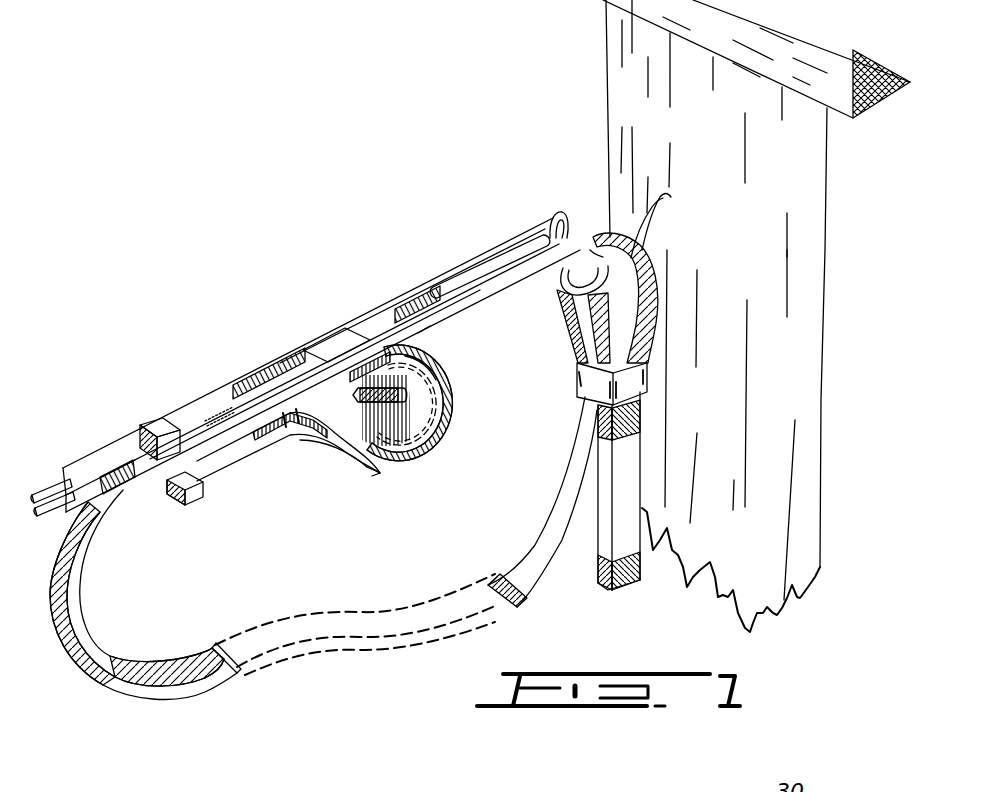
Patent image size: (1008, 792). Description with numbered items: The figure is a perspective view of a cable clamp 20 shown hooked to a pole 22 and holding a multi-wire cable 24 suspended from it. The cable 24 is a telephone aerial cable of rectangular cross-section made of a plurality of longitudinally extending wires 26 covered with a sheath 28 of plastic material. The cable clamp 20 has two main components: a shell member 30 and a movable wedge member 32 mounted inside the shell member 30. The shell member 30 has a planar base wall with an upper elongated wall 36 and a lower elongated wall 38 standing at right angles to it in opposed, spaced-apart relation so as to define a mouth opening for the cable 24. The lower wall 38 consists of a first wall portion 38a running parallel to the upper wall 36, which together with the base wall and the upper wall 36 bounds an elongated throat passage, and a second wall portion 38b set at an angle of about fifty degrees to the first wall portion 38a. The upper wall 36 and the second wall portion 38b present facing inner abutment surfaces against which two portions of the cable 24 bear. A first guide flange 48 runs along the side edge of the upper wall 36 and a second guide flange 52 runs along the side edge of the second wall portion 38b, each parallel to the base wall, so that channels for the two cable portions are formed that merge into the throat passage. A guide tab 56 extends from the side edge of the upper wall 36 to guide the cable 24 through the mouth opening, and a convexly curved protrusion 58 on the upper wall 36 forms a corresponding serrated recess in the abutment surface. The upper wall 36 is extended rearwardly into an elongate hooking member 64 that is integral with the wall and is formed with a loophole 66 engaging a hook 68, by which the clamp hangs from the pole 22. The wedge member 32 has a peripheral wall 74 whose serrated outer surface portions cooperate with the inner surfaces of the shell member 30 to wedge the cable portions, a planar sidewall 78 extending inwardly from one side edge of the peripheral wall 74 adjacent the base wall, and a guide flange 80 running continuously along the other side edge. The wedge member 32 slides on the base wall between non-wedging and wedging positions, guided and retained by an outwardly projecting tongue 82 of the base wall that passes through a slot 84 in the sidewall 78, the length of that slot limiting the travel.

The cable clamp 20 is at (490, 175).
The pole 22 is at (797, 290).
The multi-wire cable 24 is at (107, 447).
The longitudinally extending wires 26 is at (62, 477).
The sheath 28 is at (143, 423).
The shell member 30 is at (282, 357).
The movable wedge member 32 is at (450, 410).
The upper elongated wall 36 is at (397, 307).
The lower elongated wall 38 is at (187, 500).
The first wall portion 38a is at (247, 460).
The second wall portion 38b is at (347, 463).
The first guide flange 48 is at (420, 338).
The second guide flange 52 is at (367, 470).
The guide tab 56 is at (193, 447).
The convexly curved protrusion 58 is at (330, 340).
The hooking member 64 is at (527, 230).
The loophole 66 is at (492, 265).
The hook 68 is at (567, 280).
The peripheral wall 74 is at (423, 415).
The planar sidewall 78 is at (387, 433).
The guide flange 80 is at (297, 426).
The tongue 82 is at (423, 355).
The slot 84 is at (400, 388).